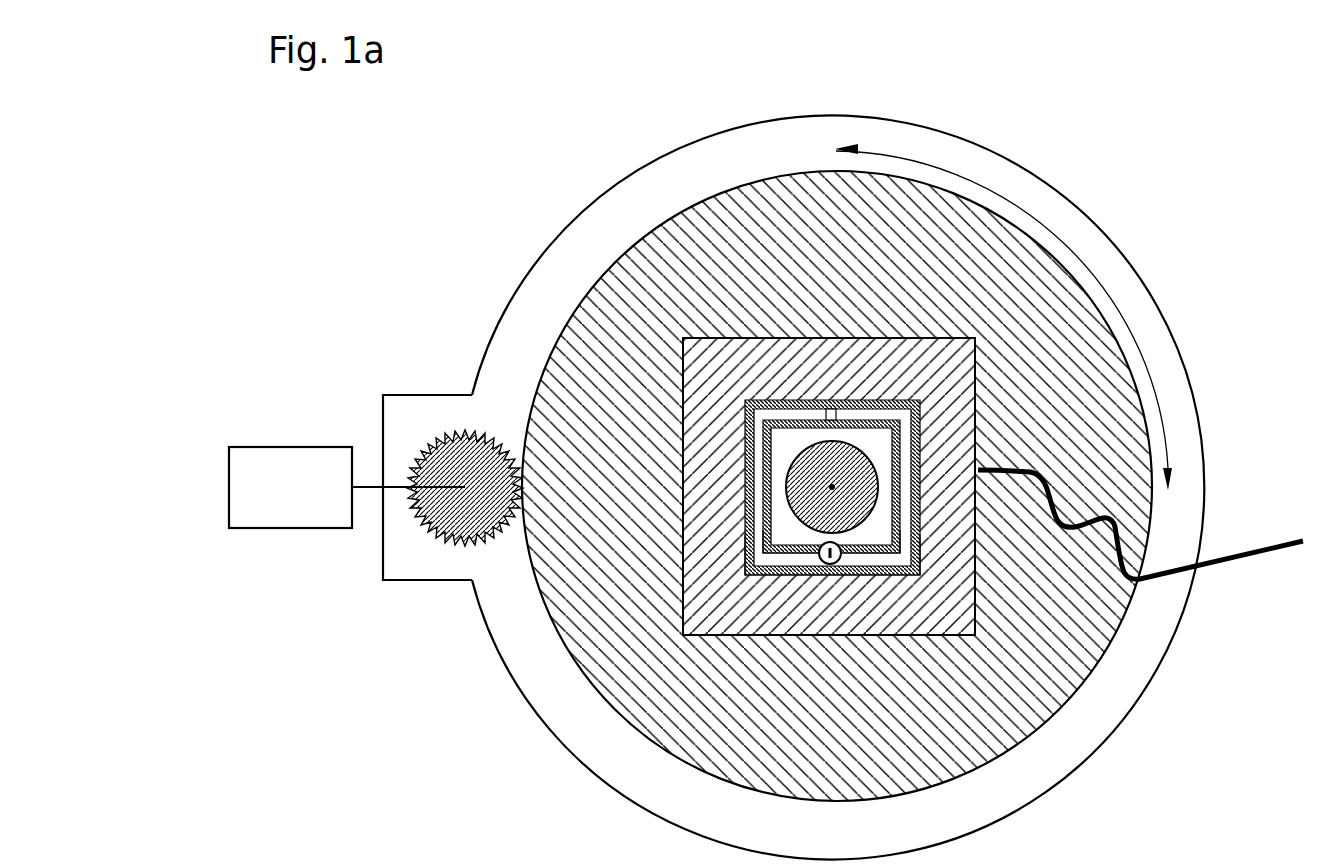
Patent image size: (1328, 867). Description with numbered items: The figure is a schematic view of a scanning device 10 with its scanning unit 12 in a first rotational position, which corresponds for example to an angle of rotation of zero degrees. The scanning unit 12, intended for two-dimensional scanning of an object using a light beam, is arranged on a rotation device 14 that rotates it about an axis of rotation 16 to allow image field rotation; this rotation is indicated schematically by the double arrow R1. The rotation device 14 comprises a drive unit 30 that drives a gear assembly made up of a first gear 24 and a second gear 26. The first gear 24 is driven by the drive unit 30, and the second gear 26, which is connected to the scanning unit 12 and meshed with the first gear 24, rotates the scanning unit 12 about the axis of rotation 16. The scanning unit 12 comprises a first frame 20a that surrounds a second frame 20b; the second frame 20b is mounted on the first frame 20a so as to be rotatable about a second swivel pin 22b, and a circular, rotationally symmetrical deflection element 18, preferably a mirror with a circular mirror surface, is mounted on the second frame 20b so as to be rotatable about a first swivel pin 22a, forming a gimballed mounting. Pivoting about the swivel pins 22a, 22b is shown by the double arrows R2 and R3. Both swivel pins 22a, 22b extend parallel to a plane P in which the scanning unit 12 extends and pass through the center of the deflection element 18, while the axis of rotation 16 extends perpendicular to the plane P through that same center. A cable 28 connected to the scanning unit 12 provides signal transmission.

The scanning device 10 is at (501, 150).
The scanning unit 12 is at (842, 340).
The rotation device 14 is at (1192, 301).
The axis of rotation 16 is at (833, 487).
The deflection element 18 is at (862, 505).
The first frame 20a is at (745, 420).
The second frame 20b is at (745, 536).
The first swivel pin 22a is at (763, 486).
The second swivel pin 22b is at (830, 560).
The first gear 24 is at (440, 533).
The second gear 26 is at (1062, 682).
The cable 28 is at (1273, 544).
The drive unit 30 is at (292, 529).
The double arrow R1 is at (1092, 270).
The double arrow R2 is at (786, 460).
The double arrow R3 is at (843, 560).
The plane P is at (960, 610).